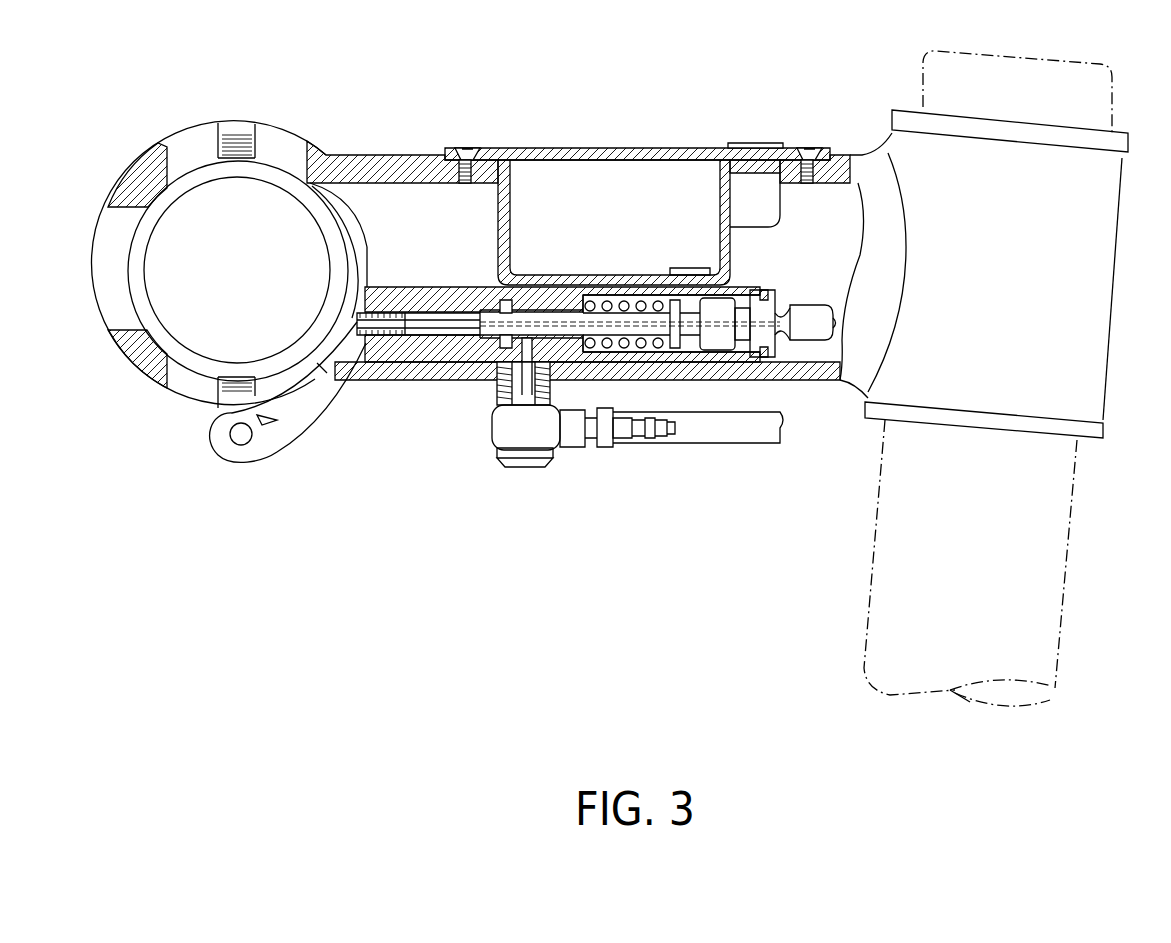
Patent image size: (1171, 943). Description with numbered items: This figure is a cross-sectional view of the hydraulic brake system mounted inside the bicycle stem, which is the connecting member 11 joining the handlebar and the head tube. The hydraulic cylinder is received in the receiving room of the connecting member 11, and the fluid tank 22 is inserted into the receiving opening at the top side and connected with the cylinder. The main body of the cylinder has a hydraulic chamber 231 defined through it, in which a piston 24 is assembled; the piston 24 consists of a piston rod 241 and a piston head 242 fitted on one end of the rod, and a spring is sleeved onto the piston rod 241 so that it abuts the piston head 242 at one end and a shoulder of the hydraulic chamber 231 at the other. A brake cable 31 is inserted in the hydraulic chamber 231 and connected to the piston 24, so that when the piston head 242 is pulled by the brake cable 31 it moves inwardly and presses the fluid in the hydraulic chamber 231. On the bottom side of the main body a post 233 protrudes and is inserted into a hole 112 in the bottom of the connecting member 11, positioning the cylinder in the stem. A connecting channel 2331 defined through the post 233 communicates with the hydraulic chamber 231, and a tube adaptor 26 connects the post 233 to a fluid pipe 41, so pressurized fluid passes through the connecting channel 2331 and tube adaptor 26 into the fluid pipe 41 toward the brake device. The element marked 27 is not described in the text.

The connecting member 11 is at (382, 167).
The cover plate 27 is at (552, 155).
The fluid tank 22 is at (658, 185).
The piston 24 is at (789, 297).
The connecting channel 2331 is at (516, 350).
The hole 112 is at (522, 392).
The post 233 is at (553, 392).
The tube adaptor 26 is at (523, 452).
The piston rod 241 is at (648, 335).
The piston head 242 is at (715, 343).
The hydraulic chamber 231 is at (763, 352).
The fluid pipe 41 is at (772, 436).
The brake cable 31 is at (332, 378).